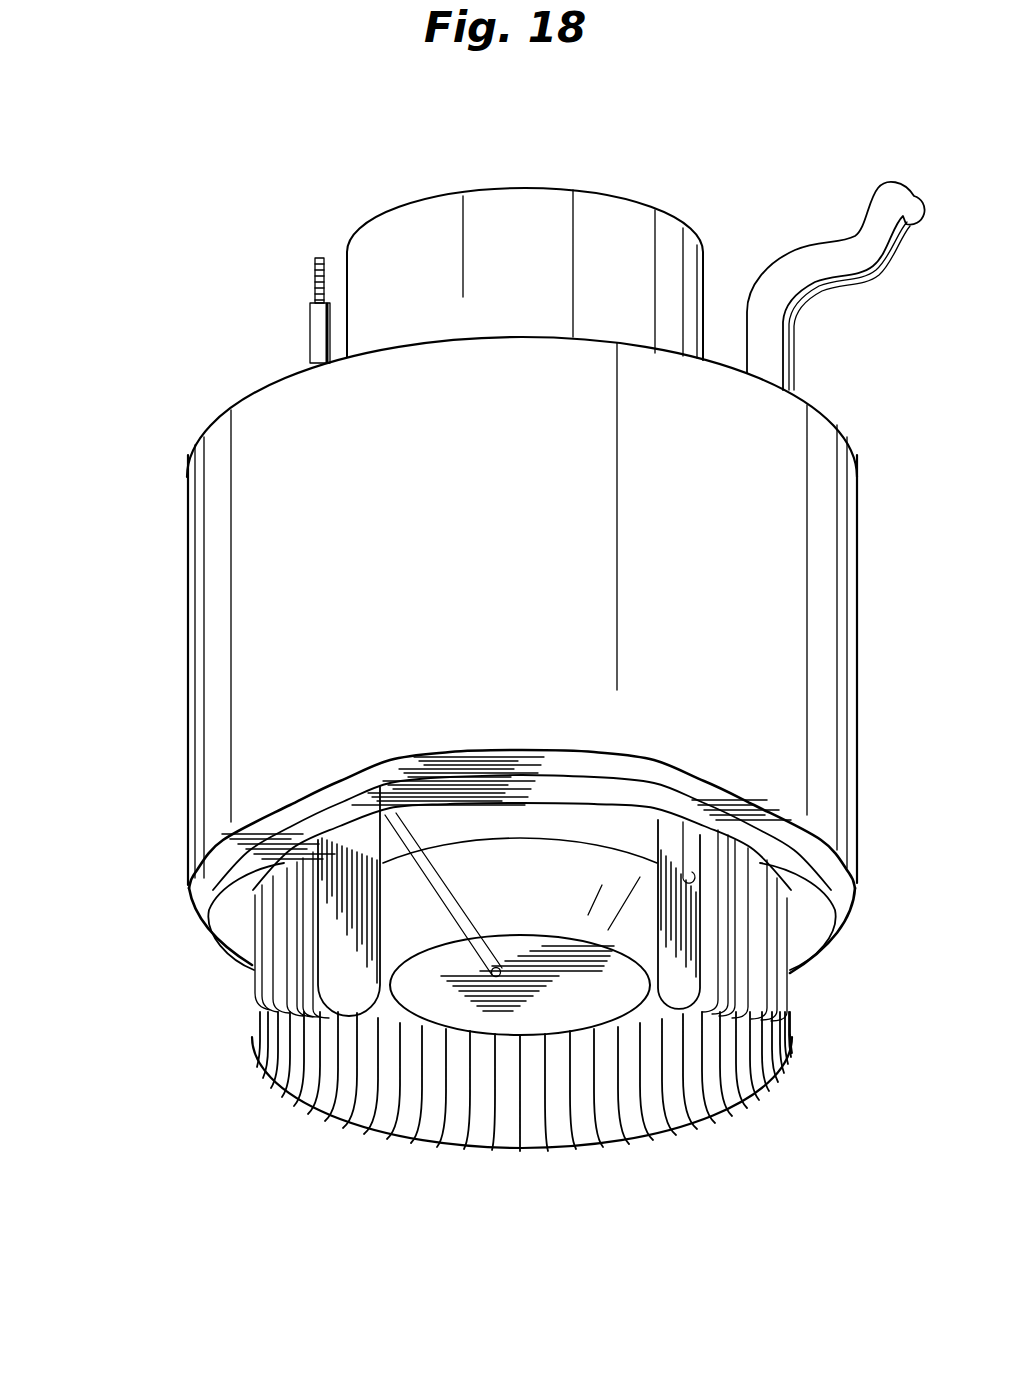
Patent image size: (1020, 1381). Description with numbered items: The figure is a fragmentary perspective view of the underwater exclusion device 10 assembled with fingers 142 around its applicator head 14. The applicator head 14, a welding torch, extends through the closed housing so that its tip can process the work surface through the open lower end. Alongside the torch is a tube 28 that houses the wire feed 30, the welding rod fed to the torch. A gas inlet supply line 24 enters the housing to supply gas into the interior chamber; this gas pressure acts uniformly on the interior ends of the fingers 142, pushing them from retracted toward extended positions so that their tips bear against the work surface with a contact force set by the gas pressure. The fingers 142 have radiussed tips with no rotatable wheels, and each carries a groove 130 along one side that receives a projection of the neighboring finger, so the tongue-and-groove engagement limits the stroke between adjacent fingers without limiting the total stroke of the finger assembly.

The exclusion device 10 is at (150, 619).
The applicator head 14 is at (404, 212).
The gas inlet supply line 24 is at (846, 274).
The tube 28 is at (316, 344).
The wire feed 30 is at (315, 287).
The groove 130 is at (692, 872).
The fingers 142 is at (487, 1125).